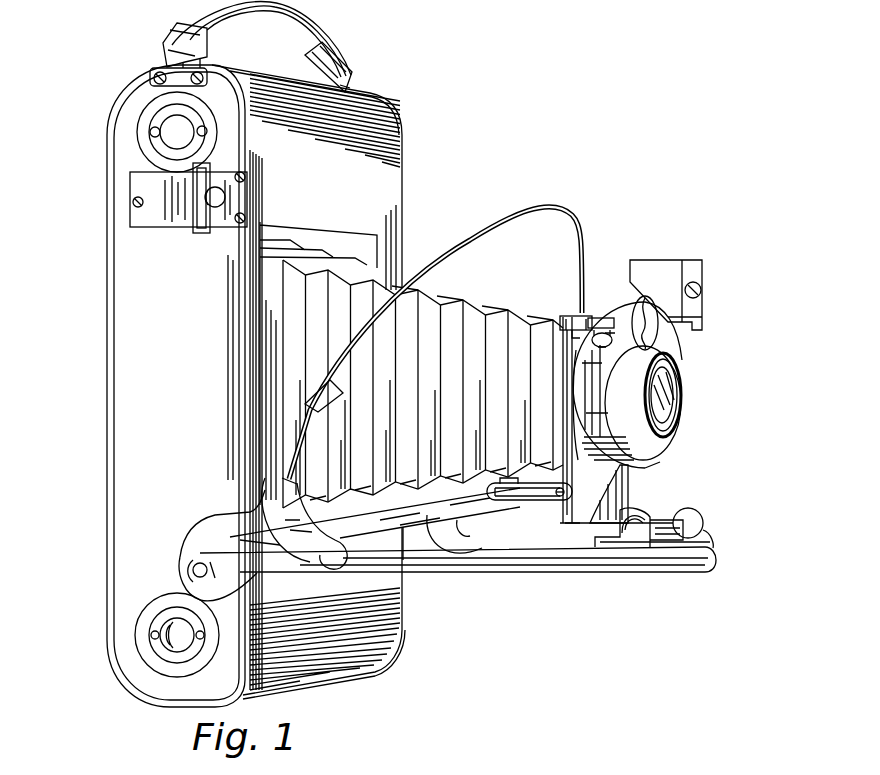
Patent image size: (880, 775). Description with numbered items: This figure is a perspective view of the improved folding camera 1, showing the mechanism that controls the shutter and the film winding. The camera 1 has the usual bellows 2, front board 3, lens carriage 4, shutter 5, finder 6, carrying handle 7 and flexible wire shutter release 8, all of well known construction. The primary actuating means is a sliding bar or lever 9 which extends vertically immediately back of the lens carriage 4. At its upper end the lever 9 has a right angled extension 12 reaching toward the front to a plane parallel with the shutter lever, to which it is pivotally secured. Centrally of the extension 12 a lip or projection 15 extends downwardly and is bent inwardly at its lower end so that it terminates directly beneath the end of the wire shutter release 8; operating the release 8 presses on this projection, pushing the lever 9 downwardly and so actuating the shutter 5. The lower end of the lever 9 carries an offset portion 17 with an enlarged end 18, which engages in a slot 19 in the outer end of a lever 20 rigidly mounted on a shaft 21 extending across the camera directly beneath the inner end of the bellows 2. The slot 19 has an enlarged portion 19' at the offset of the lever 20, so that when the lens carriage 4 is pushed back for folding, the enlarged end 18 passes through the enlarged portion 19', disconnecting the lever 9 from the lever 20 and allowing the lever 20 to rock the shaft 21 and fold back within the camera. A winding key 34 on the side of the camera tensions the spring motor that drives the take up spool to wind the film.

The camera 1 is at (386, 163).
The bellows 2 is at (450, 287).
The front board 3 is at (595, 560).
The lens carriage 4 is at (612, 497).
The shutter 5 is at (657, 445).
The finder 6 is at (657, 275).
The carrying handle 7 is at (330, 32).
The flexible wire shutter release 8 is at (540, 205).
The sliding bar or lever 9 is at (565, 428).
The right angled extension 12 is at (592, 320).
The lip or projection 15 is at (570, 316).
The offset portion 17 is at (562, 497).
The enlarged end 18 is at (543, 488).
The slot 19 is at (500, 564).
The enlarged portion of slot 19' is at (462, 571).
The lever 20 is at (417, 517).
The shaft 21 is at (200, 570).
The winding key 34 is at (197, 233).